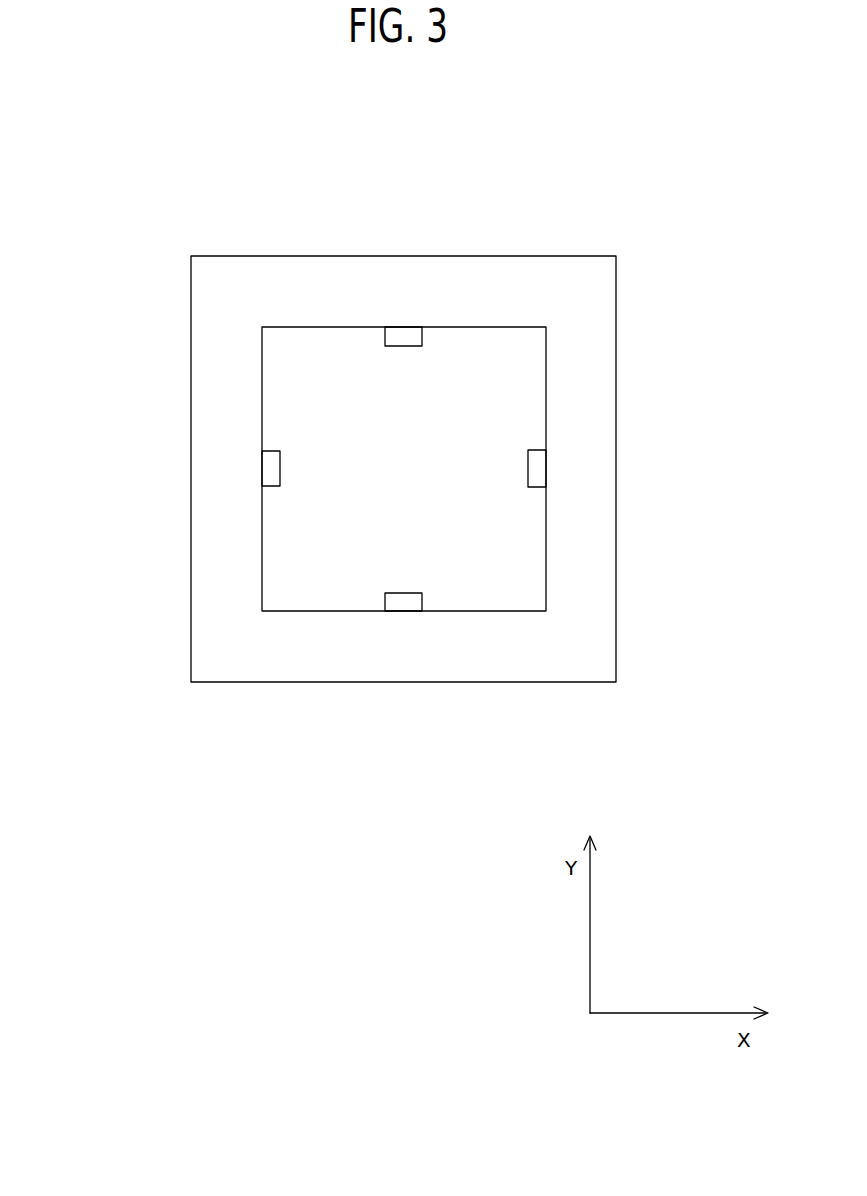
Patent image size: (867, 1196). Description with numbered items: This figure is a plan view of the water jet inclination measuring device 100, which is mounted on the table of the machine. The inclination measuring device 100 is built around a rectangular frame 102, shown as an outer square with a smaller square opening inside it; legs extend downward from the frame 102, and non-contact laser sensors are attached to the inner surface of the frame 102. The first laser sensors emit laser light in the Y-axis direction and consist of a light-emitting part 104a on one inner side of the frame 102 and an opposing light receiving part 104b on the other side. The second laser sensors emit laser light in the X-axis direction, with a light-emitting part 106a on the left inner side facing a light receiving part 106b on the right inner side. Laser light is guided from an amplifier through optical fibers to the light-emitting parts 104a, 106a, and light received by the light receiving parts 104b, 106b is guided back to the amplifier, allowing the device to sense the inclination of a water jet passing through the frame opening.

The water jet inclination measuring device 100 is at (619, 206).
The rectangular frame 102 is at (595, 392).
The light-emitting part of first laser sensor 104a is at (412, 346).
The light receiving part of first laser sensor 104b is at (393, 593).
The light-emitting part of second laser sensor 106a is at (280, 457).
The light receiving part of second laser sensor 106b is at (528, 475).